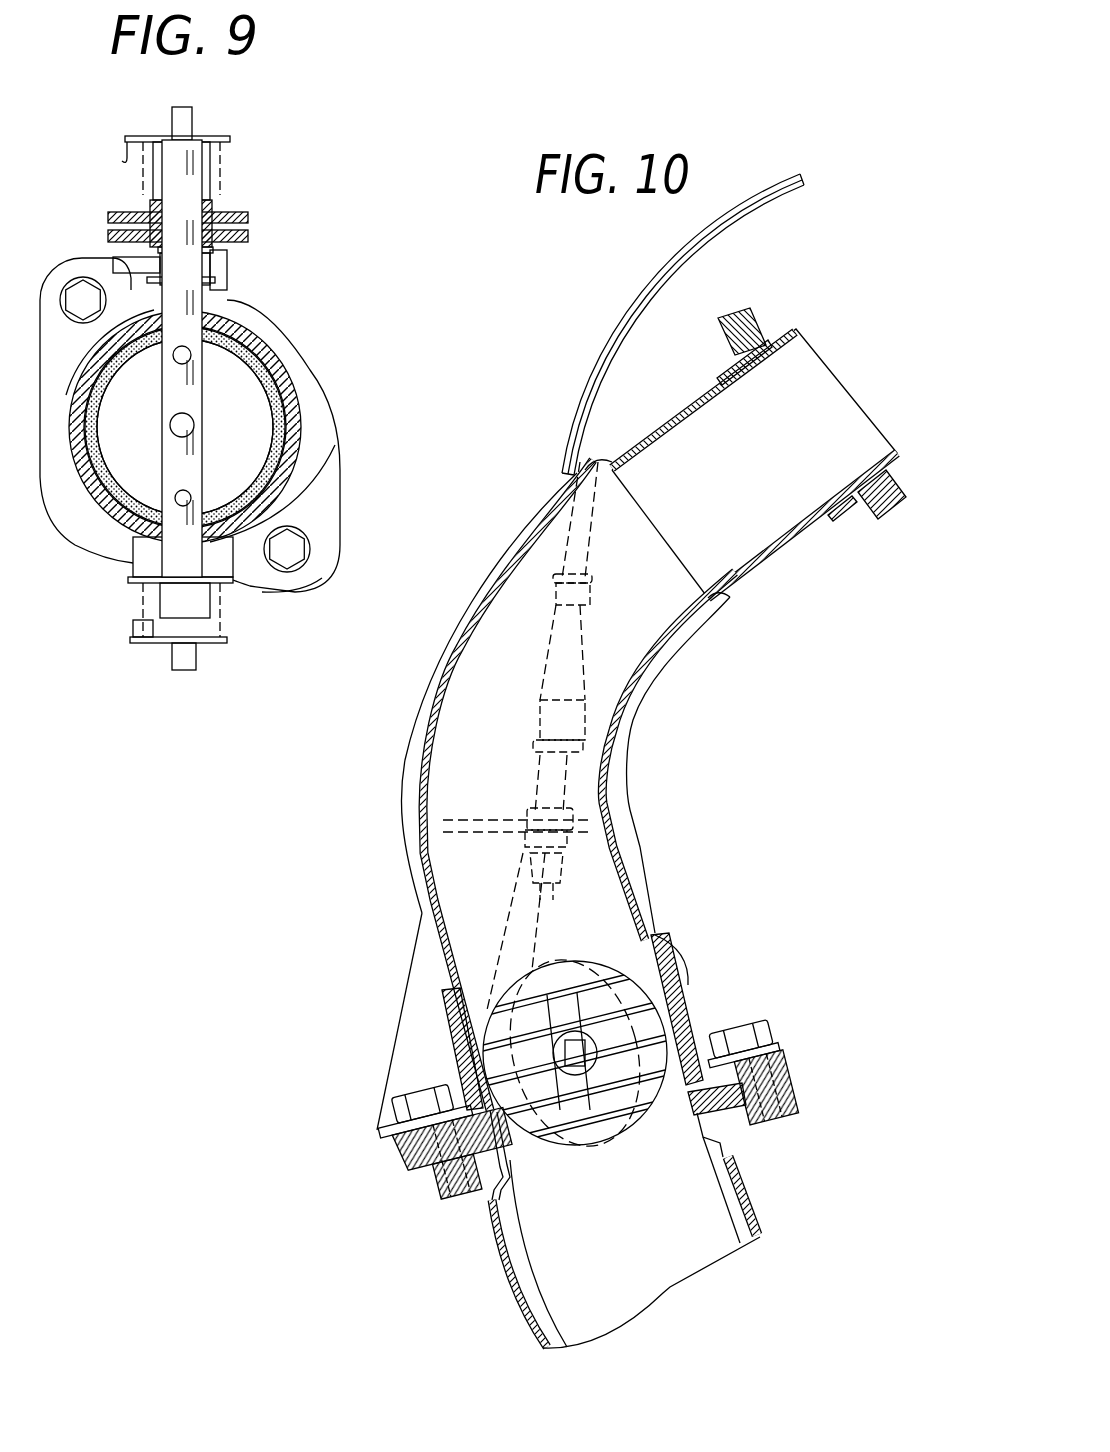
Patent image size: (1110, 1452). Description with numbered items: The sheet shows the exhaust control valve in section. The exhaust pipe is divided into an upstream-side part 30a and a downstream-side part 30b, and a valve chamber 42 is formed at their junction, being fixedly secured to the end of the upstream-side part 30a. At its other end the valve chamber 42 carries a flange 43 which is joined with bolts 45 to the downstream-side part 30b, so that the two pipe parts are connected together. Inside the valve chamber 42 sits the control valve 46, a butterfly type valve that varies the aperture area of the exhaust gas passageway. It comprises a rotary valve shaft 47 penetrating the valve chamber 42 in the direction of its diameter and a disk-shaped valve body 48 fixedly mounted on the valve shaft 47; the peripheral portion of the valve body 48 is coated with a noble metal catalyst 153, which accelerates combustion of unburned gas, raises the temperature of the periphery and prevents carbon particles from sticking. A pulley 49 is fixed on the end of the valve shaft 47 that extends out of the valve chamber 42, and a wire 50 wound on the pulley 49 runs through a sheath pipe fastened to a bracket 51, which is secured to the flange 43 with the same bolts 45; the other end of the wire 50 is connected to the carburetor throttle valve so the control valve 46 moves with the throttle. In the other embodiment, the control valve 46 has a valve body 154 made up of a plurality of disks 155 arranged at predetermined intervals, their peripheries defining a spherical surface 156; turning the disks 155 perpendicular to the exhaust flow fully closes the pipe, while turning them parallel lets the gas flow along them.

In FIG. 10, the upstream-side part 30a is at (404, 832).
In FIG. 10, the downstream-side part 30b is at (512, 1283).
In FIG. 9, the valve chamber 42 is at (300, 400).
In FIG. 10, the valve chamber 42 is at (672, 1000).
In FIG. 9, the flange 43 is at (317, 527).
In FIG. 10, the flange 43 is at (783, 1060).
In FIG. 9, the bolts 45 is at (77, 293).
In FIG. 10, the bolts 45 is at (760, 1030).
In FIG. 9, the control valve 46 is at (73, 475).
In FIG. 10, the control valve 46 is at (578, 958).
In FIG. 9, the rotary valve shaft 47 is at (203, 392).
In FIG. 10, the rotary valve shaft 47 is at (558, 1115).
In FIG. 9, the disk-shaped valve body 48 is at (243, 450).
In FIG. 9, the pulley 49 is at (248, 217).
In FIG. 10, the pulley 49 is at (663, 1087).
In FIG. 10, the wire 50 is at (535, 935).
In FIG. 10, the bracket 51 is at (398, 1038).
In FIG. 9, the noble metal catalyst 153 is at (263, 347).
In FIG. 10, the valve body 154 is at (605, 1118).
In FIG. 10, the disks 155 is at (655, 935).
In FIG. 10, the spherical surface 156 is at (537, 1145).